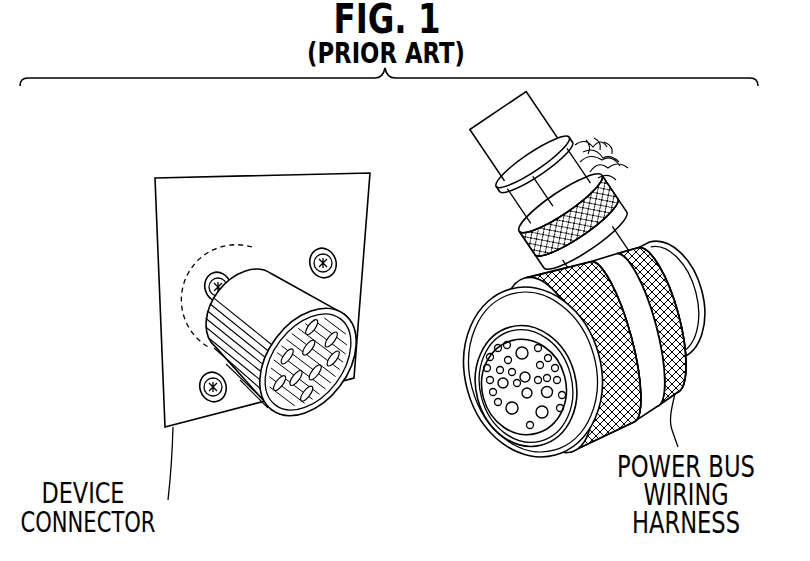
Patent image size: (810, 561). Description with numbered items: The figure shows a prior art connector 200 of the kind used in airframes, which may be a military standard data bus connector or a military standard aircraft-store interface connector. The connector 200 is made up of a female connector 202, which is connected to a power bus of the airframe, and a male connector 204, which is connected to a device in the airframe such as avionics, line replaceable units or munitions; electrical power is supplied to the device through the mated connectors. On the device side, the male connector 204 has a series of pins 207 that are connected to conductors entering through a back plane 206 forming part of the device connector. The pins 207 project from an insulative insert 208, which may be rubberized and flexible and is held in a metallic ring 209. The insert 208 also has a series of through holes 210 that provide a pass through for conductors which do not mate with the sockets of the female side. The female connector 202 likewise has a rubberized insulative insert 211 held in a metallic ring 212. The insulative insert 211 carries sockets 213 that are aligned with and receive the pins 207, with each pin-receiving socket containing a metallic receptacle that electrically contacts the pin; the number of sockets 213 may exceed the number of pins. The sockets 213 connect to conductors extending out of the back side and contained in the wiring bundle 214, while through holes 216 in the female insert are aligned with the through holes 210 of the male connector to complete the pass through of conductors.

The connector 200 is at (290, 432).
The female connector 202 is at (464, 371).
The male connector 204 is at (250, 337).
The back plane 206 is at (157, 248).
The pins 207 is at (337, 327).
The insulative insert 208 is at (327, 317).
The metallic ring 209 is at (268, 287).
The through holes 210 is at (313, 396).
The insulative insert 211 is at (495, 400).
The metallic ring 212 is at (528, 292).
The sockets 213 is at (548, 418).
The wiring bundle 214 is at (573, 221).
The through holes 216 is at (514, 416).